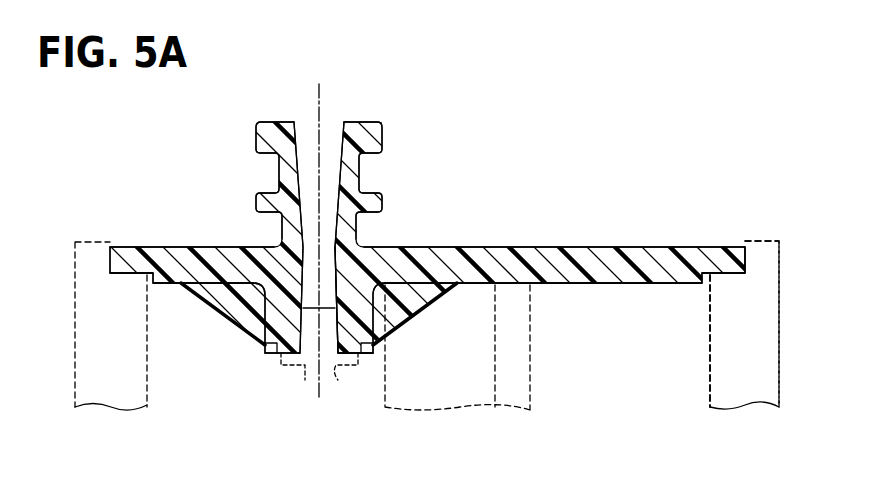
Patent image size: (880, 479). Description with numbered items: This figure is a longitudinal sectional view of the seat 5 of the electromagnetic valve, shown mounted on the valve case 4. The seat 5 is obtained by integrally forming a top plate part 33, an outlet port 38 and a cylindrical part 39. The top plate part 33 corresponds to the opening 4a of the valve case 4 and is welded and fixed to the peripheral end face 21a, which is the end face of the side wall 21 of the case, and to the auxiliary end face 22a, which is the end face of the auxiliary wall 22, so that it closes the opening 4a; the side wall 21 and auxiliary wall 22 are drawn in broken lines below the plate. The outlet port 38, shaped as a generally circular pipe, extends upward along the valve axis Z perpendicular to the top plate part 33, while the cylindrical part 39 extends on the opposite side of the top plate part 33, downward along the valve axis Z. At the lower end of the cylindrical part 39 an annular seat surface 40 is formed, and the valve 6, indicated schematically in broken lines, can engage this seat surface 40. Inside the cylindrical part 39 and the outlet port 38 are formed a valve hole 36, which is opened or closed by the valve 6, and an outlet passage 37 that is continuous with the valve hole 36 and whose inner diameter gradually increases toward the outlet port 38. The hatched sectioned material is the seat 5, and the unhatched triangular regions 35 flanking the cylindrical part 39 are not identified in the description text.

The valve case 4 is at (783, 272).
The opening 4a is at (710, 315).
The seat 5 is at (183, 145).
The valve 6 is at (338, 380).
The side wall 21 is at (78, 356).
The peripheral end face 21a is at (132, 272).
The auxiliary wall 22 is at (520, 358).
The auxiliary end face 22a is at (508, 282).
The top plate part 33 is at (610, 272).
The rib 35 is at (243, 296).
The valve hole 36 is at (328, 338).
The outlet passage 37 is at (328, 252).
The outlet port 38 is at (257, 141).
The cylindrical part 39 is at (280, 312).
The seat surface 40 is at (300, 355).
The valve axis Z is at (323, 88).